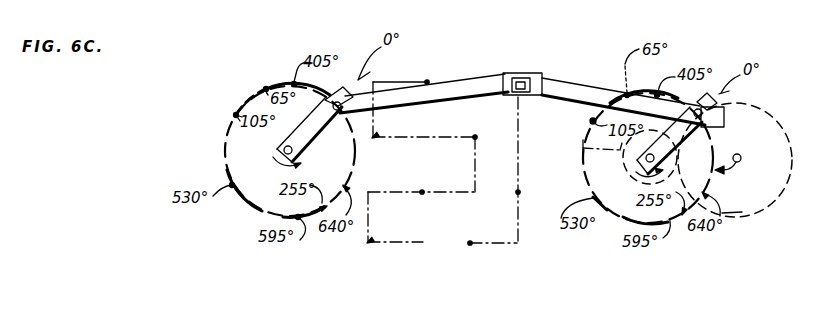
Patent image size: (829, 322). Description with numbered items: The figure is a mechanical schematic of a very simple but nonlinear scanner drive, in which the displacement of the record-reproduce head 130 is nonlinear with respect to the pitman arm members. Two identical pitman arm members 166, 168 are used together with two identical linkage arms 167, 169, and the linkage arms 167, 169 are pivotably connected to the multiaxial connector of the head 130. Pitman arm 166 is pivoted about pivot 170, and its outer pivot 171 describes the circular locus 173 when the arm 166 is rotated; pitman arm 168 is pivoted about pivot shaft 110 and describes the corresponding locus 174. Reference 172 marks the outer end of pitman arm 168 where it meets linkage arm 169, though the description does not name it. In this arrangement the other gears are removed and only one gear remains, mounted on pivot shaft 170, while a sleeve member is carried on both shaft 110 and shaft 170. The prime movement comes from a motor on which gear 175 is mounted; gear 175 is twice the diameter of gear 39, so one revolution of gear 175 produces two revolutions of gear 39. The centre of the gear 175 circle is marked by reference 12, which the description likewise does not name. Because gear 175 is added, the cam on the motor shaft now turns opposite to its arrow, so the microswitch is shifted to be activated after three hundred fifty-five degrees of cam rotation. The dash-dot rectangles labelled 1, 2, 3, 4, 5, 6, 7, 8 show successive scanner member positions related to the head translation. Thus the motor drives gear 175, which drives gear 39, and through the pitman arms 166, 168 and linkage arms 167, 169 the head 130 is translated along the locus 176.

The gear train / drive mechanism 1 is at (522, 85).
The position 2 of indexing box 2 is at (427, 82).
The position 3 of indexing box 3 is at (376, 135).
The position 4 of indexing box 4 is at (475, 137).
The position 5 of indexing box 5 is at (422, 193).
The position 6 of indexing box 6 is at (372, 240).
The position 7 of indexing box 7 is at (470, 243).
The position 8 of indexing box 8 is at (517, 192).
The drive shaft pivot 12 is at (741, 160).
The gear 39 is at (587, 145).
The pivot shaft 110 is at (283, 150).
The head 130 is at (512, 95).
The pitman arm member 166 is at (678, 158).
The linkage arm 167 is at (574, 66).
The pitman arm member 168 is at (307, 148).
The linkage arm 169 is at (419, 97).
The pivot shaft 170 is at (645, 159).
The pivot 171 is at (727, 113).
The left end pivot block 172 is at (327, 100).
The locus 173 is at (692, 238).
The locus 174 is at (240, 213).
The gear 175 is at (778, 207).
The locus 176 is at (428, 243).